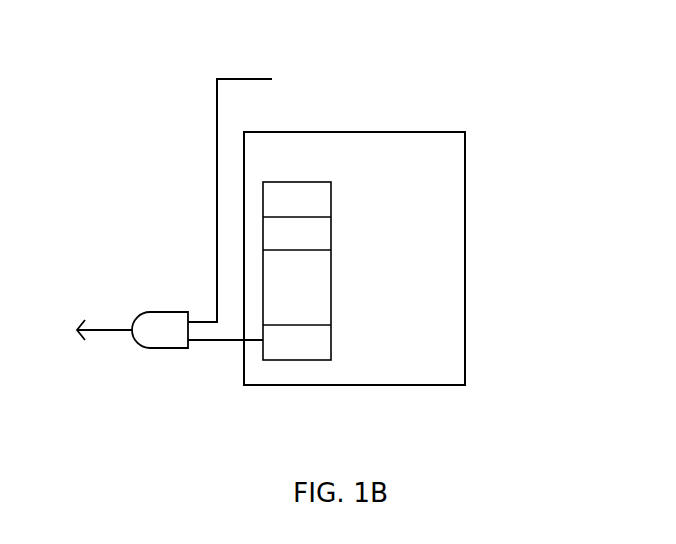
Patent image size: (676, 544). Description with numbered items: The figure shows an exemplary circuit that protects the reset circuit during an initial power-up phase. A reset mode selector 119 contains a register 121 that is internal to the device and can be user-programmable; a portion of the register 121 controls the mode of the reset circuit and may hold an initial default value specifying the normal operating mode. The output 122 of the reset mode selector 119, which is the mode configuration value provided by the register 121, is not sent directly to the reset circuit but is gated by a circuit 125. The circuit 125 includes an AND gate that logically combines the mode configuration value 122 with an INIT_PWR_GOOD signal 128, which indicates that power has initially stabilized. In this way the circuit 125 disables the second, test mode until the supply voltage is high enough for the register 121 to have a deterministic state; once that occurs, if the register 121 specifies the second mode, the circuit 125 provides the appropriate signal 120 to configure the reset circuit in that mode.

The reset mode selector 119 is at (465, 260).
The signal 120 is at (103, 332).
The register 121 is at (331, 195).
The output 122 is at (225, 342).
The circuit 125 is at (170, 312).
The INIT_PWR_GOOD signal 128 is at (388, 56).